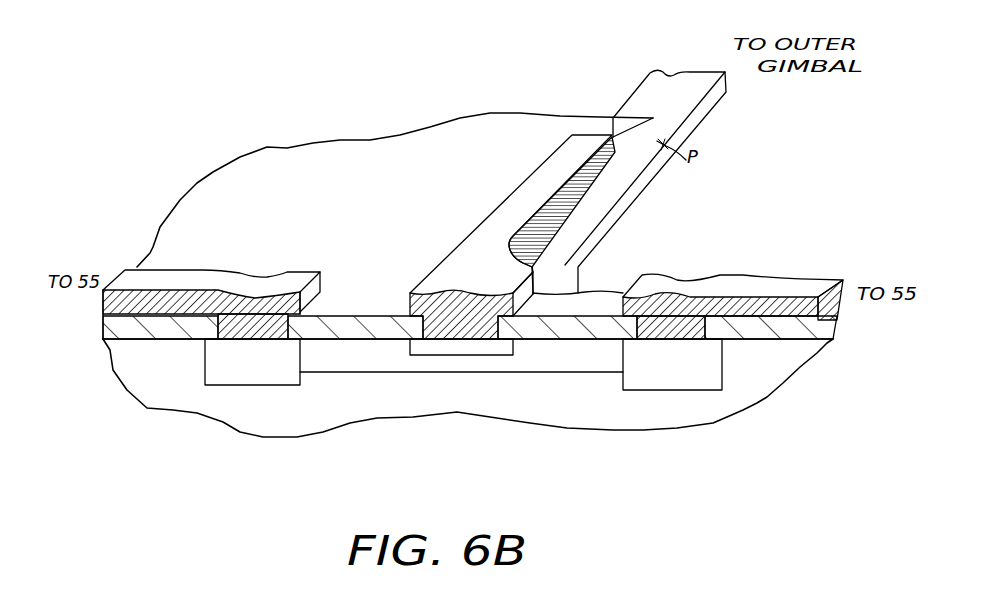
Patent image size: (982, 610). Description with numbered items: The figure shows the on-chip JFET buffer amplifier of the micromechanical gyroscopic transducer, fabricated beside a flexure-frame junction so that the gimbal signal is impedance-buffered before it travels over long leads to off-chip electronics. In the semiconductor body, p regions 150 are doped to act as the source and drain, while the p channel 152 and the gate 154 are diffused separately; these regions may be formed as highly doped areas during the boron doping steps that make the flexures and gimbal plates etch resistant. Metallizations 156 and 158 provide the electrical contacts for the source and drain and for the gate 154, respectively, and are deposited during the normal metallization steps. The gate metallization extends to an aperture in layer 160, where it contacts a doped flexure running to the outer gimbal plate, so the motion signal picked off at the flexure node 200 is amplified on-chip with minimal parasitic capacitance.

The p regions 150 is at (243, 385).
The p channel 152 is at (382, 367).
The gate 154 is at (493, 357).
The metallization 156 is at (235, 272).
The metallization 158 is at (757, 280).
The layer 160 is at (600, 118).
The flexure node 200 is at (490, 280).